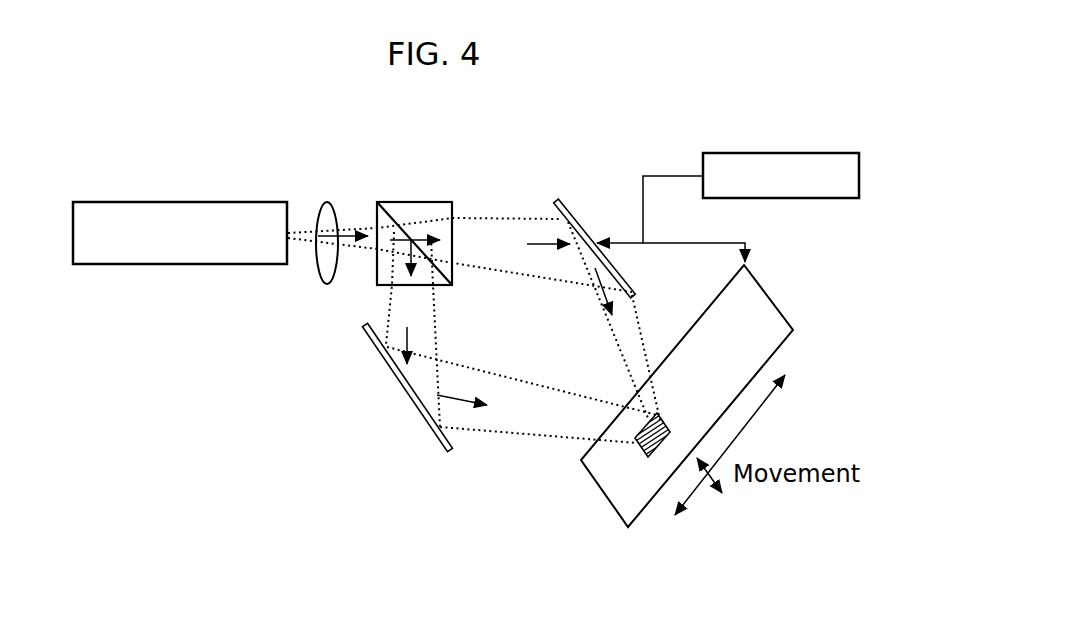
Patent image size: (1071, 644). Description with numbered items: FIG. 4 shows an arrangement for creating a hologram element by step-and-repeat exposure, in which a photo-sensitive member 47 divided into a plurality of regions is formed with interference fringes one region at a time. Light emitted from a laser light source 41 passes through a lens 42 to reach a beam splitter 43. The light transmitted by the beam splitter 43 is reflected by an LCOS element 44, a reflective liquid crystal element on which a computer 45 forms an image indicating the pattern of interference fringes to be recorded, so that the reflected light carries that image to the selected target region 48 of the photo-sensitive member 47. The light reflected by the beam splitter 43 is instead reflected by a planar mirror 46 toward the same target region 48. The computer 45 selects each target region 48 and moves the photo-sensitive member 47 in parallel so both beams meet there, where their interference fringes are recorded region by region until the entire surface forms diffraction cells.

The laser light source 41 is at (255, 209).
The lens 42 is at (328, 203).
The beam splitter 43 is at (428, 210).
The LCOS element 44 is at (577, 221).
The computer 45 is at (822, 153).
The planar mirror 46 is at (408, 390).
The photo-sensitive member 47 is at (773, 294).
The target region 48 is at (640, 454).